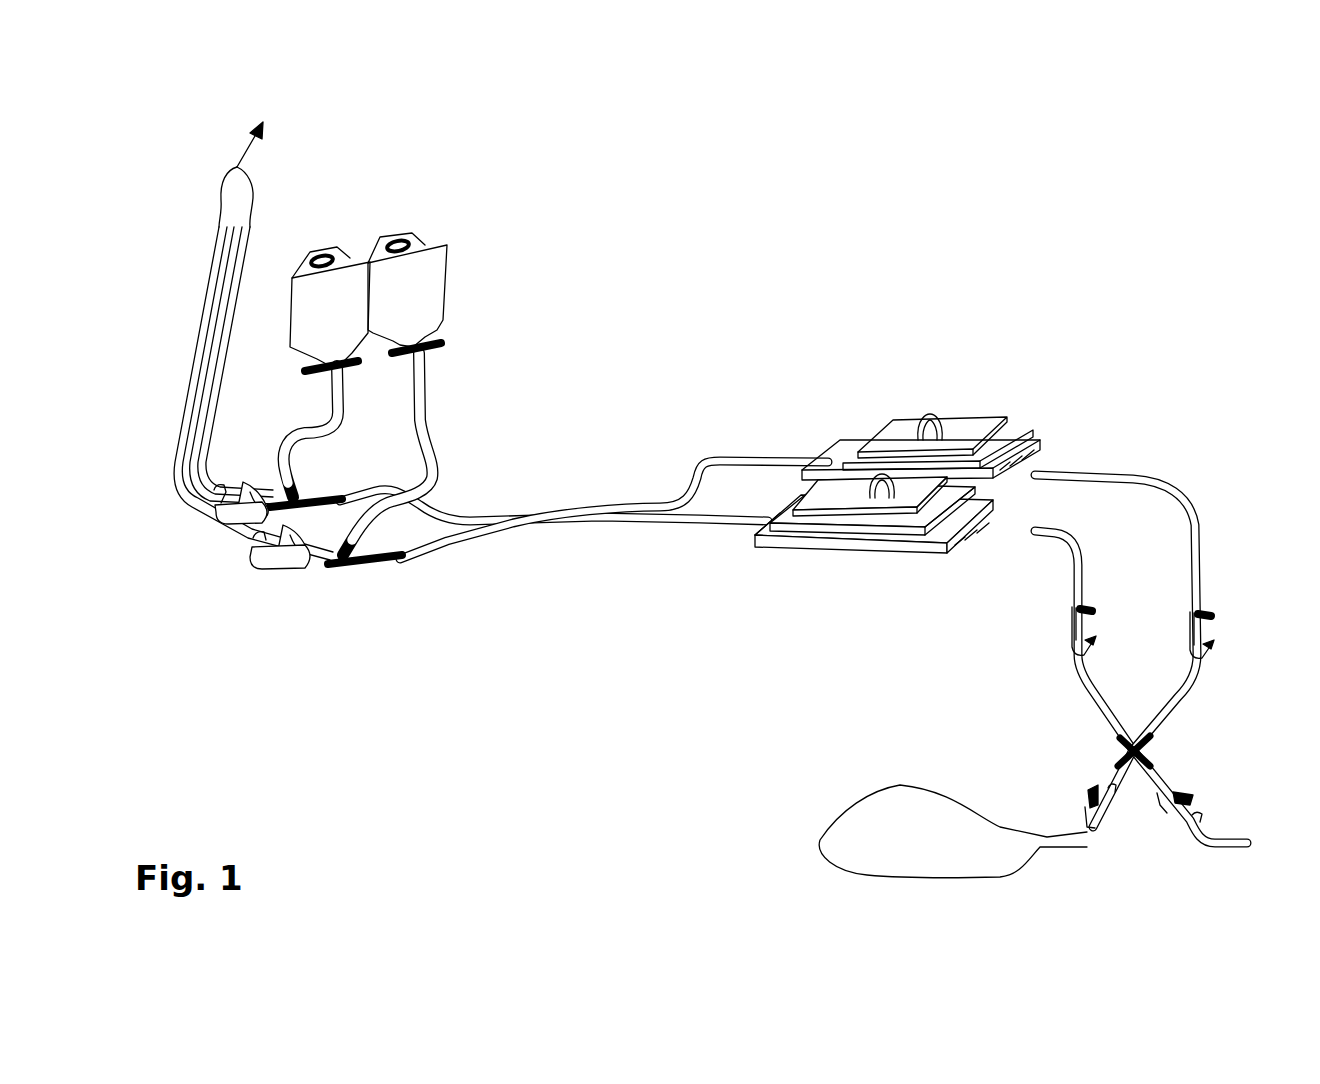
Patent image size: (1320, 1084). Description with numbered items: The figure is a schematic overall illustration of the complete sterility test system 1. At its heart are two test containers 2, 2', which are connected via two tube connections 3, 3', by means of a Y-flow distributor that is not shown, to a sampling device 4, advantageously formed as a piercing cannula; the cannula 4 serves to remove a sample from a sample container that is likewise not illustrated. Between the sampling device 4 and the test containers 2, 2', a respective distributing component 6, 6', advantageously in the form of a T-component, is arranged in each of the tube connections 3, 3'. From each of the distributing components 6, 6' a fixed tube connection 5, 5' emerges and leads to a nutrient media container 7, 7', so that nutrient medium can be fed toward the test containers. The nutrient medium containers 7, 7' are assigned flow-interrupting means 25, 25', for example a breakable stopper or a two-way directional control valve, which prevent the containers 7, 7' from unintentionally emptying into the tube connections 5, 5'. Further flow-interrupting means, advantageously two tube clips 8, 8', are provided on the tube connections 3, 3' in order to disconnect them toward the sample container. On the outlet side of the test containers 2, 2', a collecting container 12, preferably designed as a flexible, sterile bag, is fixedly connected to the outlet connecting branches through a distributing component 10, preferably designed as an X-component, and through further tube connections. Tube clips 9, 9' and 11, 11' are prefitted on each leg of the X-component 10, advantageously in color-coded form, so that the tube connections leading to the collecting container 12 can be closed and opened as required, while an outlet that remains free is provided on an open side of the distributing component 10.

The sterility test system 1 is at (692, 293).
The test container 2 is at (921, 406).
The test container 2' is at (859, 544).
The tube connection 3 is at (205, 362).
The tube connection 3' is at (220, 393).
The sampling device 4 is at (242, 158).
The fixed tube connection 5 is at (289, 431).
The fixed tube connection 5' is at (421, 454).
The distributing component 6 is at (313, 470).
The distributing component 6' is at (384, 588).
The nutrient media container 7 is at (343, 255).
The nutrient media container 7' is at (441, 264).
The tube clip 8 is at (210, 530).
The tube clip 8' is at (266, 583).
The tube clip 9 is at (1233, 602).
The tube clip 9' is at (1116, 604).
The distributing component 10 is at (1147, 750).
The tube clip 11 is at (1057, 779).
The tube clip 11' is at (1226, 796).
The collecting container 12 is at (902, 865).
The flow-interrupting means 25 is at (298, 356).
The flow-interrupting means 25' is at (456, 330).